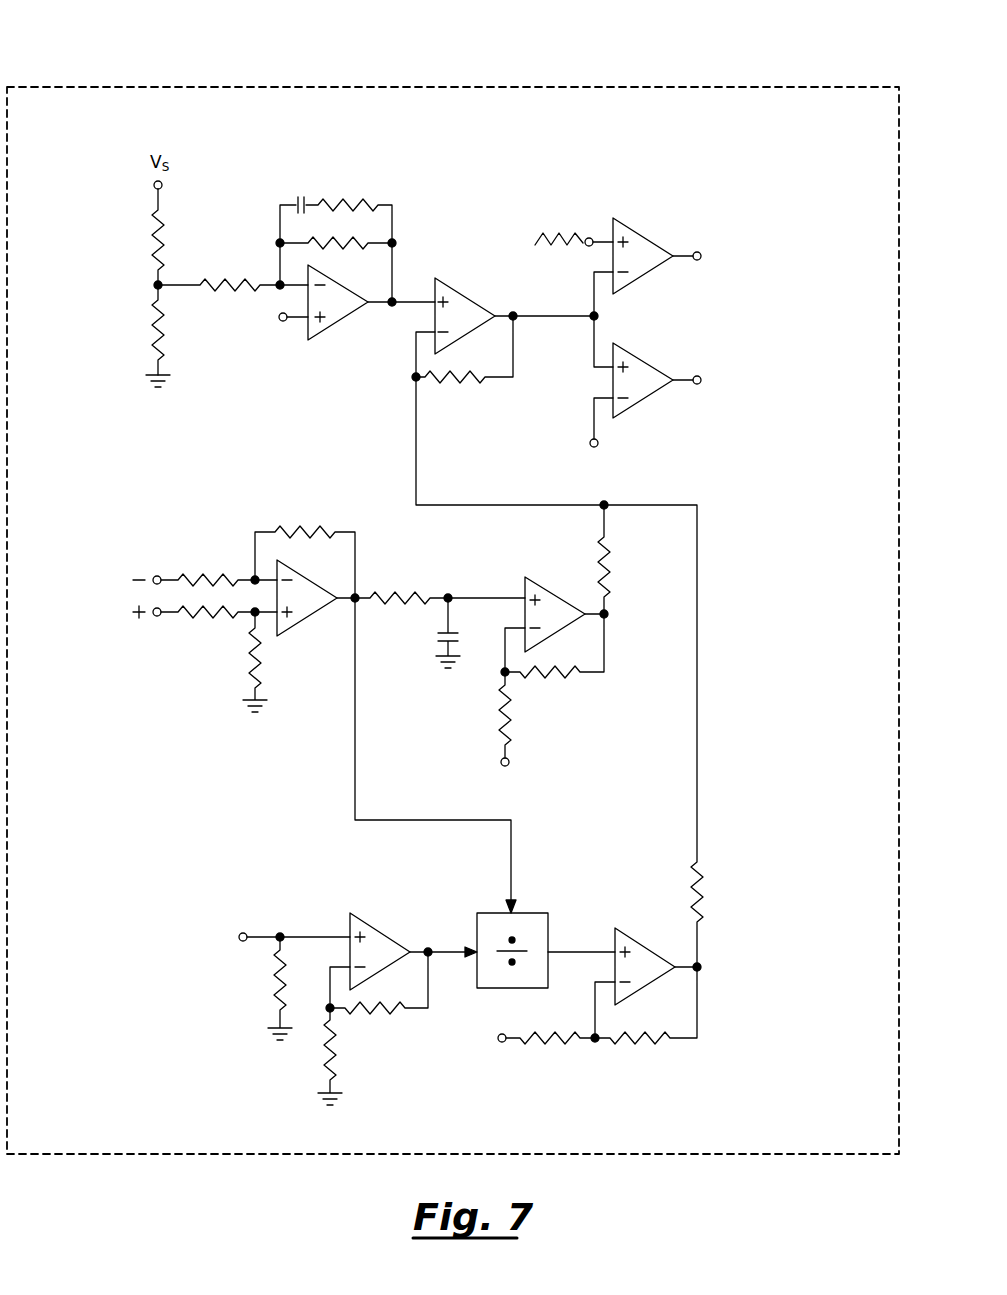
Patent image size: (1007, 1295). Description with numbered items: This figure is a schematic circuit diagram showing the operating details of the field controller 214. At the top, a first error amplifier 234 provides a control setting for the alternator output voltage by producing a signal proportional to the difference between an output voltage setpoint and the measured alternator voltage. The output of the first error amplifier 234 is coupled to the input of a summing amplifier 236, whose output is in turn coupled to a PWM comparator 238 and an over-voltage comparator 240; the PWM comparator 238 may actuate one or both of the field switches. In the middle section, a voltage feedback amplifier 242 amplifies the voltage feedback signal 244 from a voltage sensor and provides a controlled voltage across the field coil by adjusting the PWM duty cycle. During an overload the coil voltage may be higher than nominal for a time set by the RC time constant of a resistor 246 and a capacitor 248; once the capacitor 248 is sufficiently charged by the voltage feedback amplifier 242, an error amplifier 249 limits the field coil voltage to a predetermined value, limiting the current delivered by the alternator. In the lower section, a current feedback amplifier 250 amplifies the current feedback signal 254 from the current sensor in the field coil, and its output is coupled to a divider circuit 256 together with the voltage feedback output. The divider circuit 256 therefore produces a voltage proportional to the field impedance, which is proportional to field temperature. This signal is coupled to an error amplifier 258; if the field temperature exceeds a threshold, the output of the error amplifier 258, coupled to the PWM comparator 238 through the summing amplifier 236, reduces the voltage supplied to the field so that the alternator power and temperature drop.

The field controller 214 is at (116, 87).
The first error amplifier 234 is at (330, 326).
The summing amplifier 236 is at (480, 300).
The PWM comparator 238 is at (640, 230).
The over-voltage comparator 240 is at (645, 362).
The voltage feedback amplifier 242 is at (315, 619).
The voltage feedback signal 244 is at (72, 636).
The resistor 246 is at (404, 601).
The capacitor 248 is at (462, 640).
The error amplifier 249 is at (562, 596).
The current feedback amplifier 250 is at (392, 936).
The current feedback signal 254 is at (142, 930).
The divider circuit 256 is at (535, 913).
The error amplifier 258 is at (650, 946).